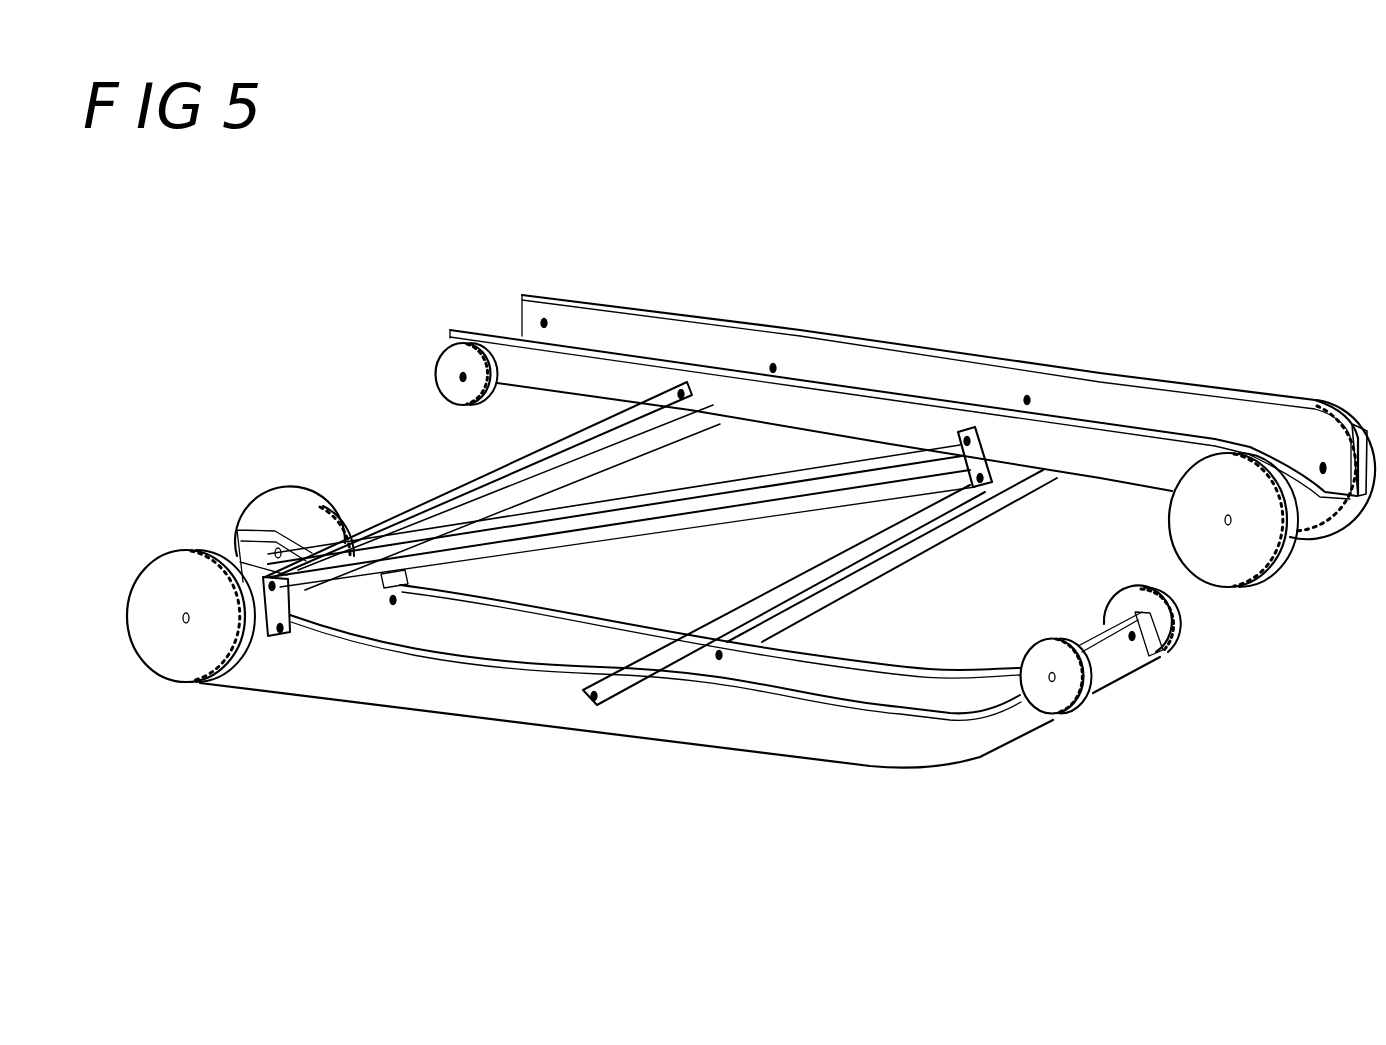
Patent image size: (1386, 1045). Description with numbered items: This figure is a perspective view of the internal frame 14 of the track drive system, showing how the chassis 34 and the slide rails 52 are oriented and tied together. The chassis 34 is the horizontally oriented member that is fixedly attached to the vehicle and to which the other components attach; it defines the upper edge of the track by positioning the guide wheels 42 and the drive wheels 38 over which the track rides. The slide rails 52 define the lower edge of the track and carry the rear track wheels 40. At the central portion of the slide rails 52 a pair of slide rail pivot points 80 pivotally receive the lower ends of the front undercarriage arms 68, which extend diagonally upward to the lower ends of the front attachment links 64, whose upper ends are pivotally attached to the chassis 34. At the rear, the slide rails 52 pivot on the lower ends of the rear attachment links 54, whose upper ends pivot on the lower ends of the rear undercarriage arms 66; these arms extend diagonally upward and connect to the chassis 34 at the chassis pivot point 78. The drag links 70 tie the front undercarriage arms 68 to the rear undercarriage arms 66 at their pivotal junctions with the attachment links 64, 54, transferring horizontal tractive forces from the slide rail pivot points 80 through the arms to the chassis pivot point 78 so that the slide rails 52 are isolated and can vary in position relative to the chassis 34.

The internal frame 14 is at (582, 272).
The chassis 34 is at (1132, 458).
The drive wheels 38 is at (1317, 510).
The rear track wheels 40 is at (252, 512).
The guide wheels 42 is at (547, 292).
The slide rails 52 is at (510, 630).
The rear attachment links 54 is at (390, 580).
The front attachment links 64 is at (1027, 388).
The rear undercarriage arms 66 is at (528, 490).
The front undercarriage arms 68 is at (860, 587).
The drag links 70 is at (853, 460).
The chassis pivot point 78 is at (770, 355).
The slide rail pivot points 80 is at (710, 665).